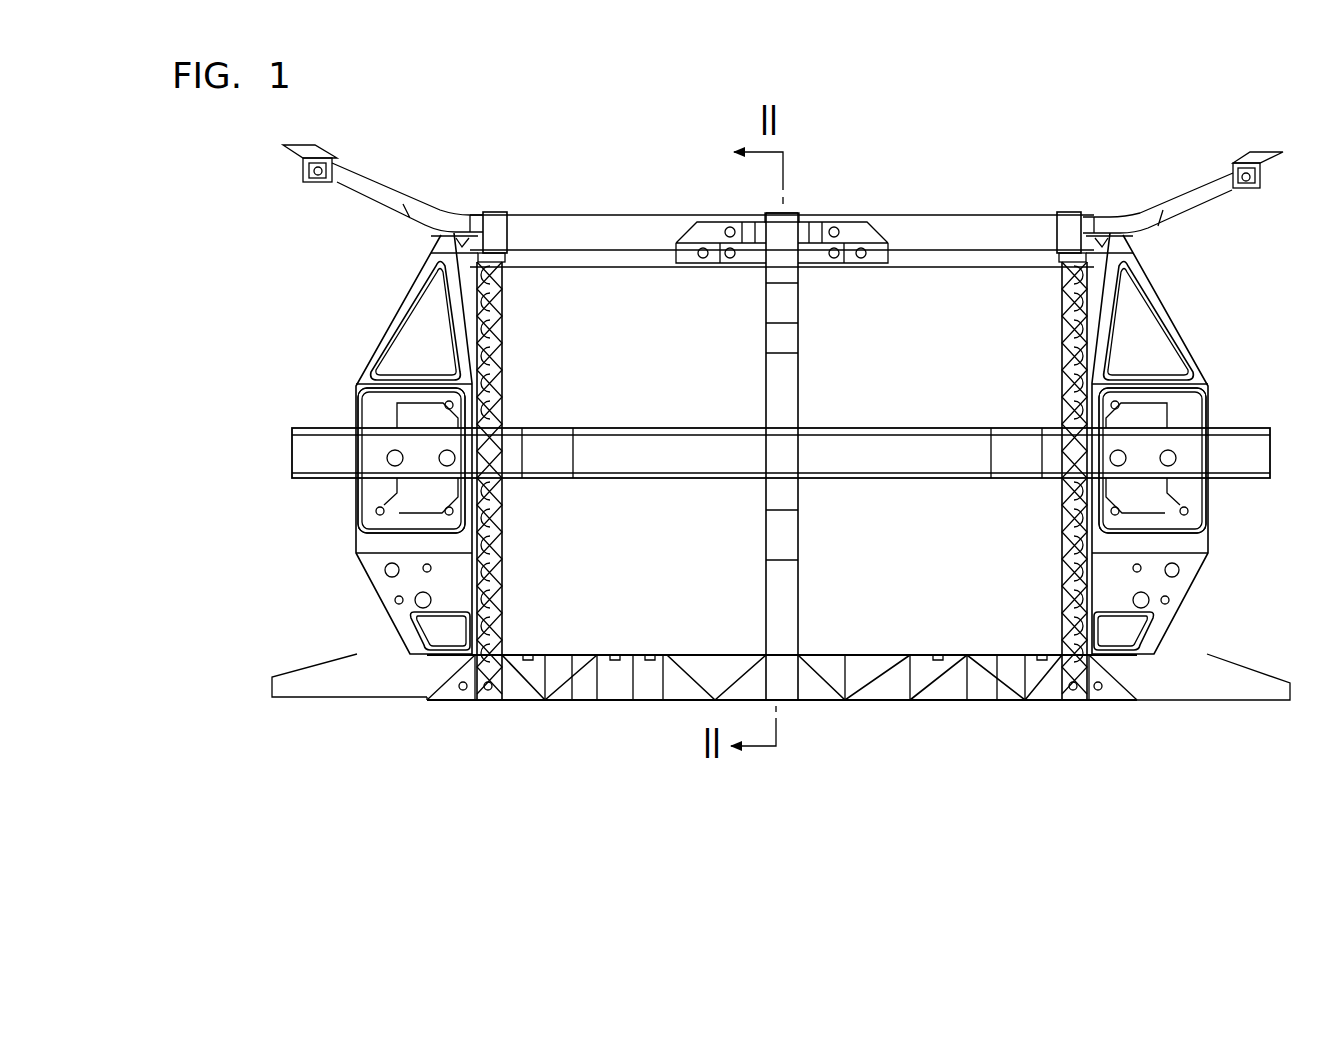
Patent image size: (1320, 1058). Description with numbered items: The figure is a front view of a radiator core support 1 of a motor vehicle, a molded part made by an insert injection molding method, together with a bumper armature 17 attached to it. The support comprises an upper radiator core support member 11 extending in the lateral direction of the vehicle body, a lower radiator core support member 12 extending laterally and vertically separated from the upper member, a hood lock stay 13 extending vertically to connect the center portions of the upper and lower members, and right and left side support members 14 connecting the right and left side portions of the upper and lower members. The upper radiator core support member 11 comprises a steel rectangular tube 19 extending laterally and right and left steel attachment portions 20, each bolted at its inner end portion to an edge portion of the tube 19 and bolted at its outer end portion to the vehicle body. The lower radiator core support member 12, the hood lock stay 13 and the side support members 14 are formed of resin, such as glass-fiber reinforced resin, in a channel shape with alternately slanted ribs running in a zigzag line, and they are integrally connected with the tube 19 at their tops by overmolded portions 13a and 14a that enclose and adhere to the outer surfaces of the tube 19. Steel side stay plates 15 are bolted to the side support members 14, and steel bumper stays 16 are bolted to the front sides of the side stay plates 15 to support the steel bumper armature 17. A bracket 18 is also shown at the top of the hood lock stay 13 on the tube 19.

The radiator core support 1 is at (696, 128).
The upper radiator core support member 11 is at (942, 182).
The lower radiator core support member 12 is at (580, 702).
The hood lock stay 13 is at (768, 538).
The overmolded portion 13a is at (786, 224).
The side support member 14 is at (504, 330).
The overmolded portion 14a is at (494, 228).
The side stay plate 15 is at (390, 312).
The bumper stay 16 is at (393, 415).
The bumper armature 17 is at (880, 460).
The mounting bracket 18 is at (848, 234).
The rectangular tube 19 is at (600, 232).
The attachment portion 20 is at (381, 185).